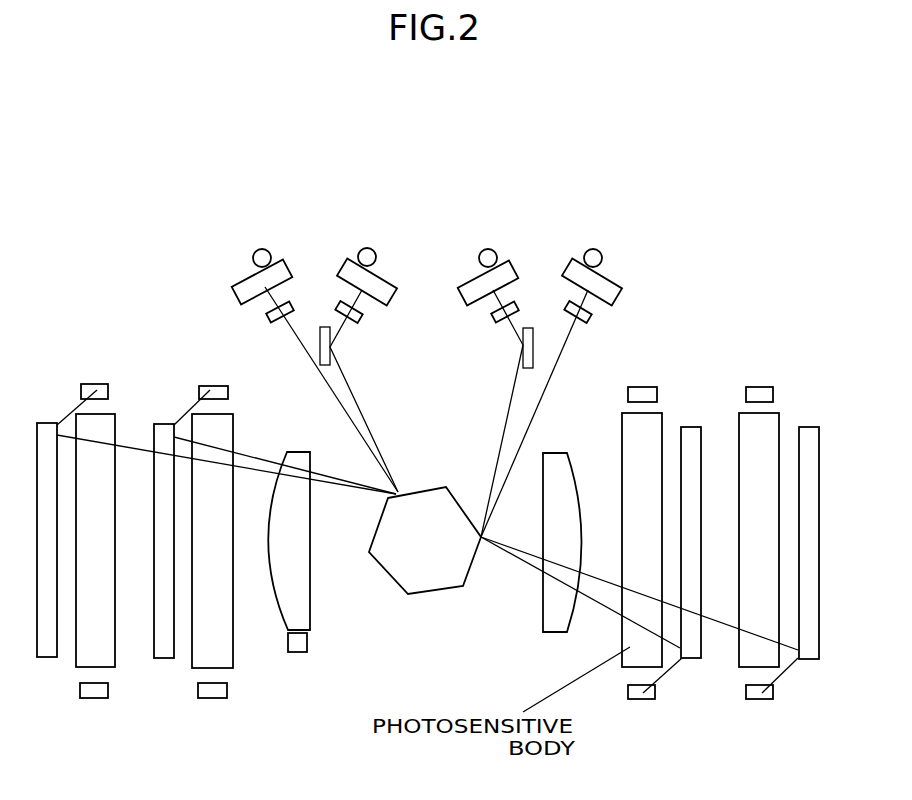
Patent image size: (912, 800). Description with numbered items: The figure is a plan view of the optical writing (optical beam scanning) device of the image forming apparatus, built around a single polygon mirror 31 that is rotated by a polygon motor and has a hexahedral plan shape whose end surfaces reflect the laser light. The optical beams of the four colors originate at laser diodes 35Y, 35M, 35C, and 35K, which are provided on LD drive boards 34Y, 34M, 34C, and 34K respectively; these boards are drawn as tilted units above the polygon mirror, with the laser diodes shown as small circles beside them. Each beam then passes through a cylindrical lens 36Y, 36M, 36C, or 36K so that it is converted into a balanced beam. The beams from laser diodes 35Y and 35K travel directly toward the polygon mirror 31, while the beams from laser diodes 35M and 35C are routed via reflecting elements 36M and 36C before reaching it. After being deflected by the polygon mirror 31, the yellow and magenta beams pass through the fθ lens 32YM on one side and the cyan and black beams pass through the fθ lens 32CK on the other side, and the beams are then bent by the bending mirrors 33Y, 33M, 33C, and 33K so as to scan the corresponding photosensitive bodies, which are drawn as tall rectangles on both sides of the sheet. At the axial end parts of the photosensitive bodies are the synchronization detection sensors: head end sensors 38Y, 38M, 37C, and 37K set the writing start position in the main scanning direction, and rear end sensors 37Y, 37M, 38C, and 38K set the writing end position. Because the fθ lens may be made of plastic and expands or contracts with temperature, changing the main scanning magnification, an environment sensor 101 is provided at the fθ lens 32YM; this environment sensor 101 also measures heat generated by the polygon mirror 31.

The polygon mirror 31 is at (418, 568).
The fθ lens 32YM is at (290, 593).
The fθ lens 32CK is at (543, 612).
The bending mirror 33Y is at (46, 658).
The bending mirror 33M is at (160, 658).
The bending mirror 33C is at (693, 652).
The bending mirror 33K is at (808, 665).
The LD drive board 34Y is at (278, 273).
The LD drive board 34M is at (397, 280).
The LD drive board 34C is at (515, 275).
The LD drive board 34K is at (615, 283).
The laser diode 35Y is at (262, 249).
The laser diode 35M is at (367, 248).
The laser diode 35C is at (485, 248).
The laser diode 35K is at (596, 249).
The cylindrical lens 36Y is at (265, 315).
The cylindrical lens 36M is at (363, 312).
The cylindrical lens 36C is at (492, 318).
The cylindrical lens 36K is at (588, 320).
The rear end synchronization detection sensor 37Y is at (94, 699).
The rear end synchronization detection sensor 37M is at (212, 699).
The head end synchronization detection sensor 37C is at (633, 700).
The head end synchronization detection sensor 37K is at (762, 700).
The head end synchronization detection sensor 38Y is at (93, 385).
The head end synchronization detection sensor 38M is at (213, 387).
The rear end synchronization detection sensor 38C is at (643, 397).
The rear end synchronization detection sensor 38K is at (773, 393).
The environment sensor 101 is at (307, 648).